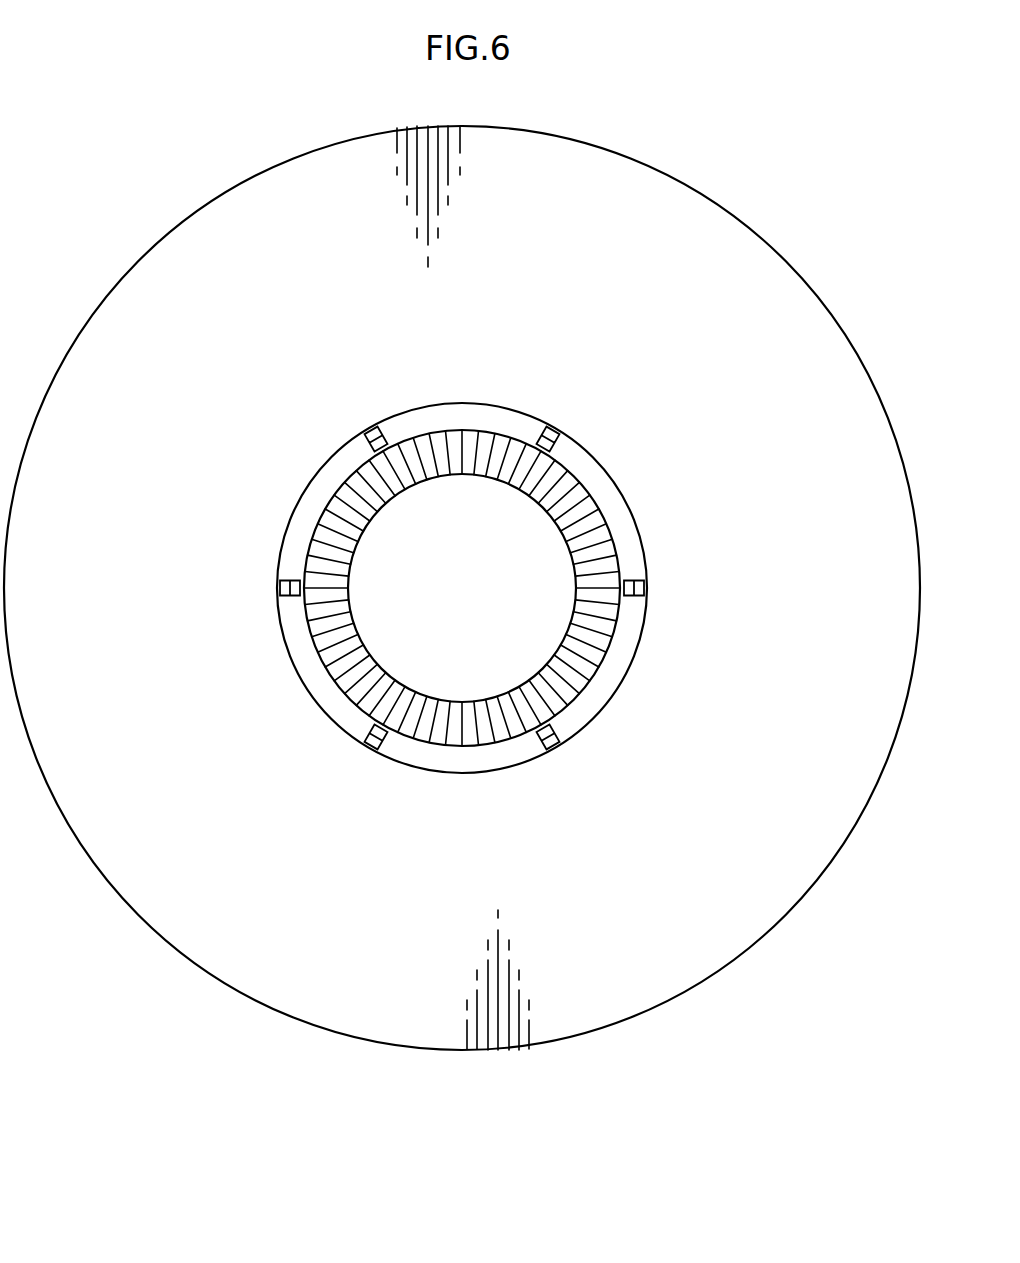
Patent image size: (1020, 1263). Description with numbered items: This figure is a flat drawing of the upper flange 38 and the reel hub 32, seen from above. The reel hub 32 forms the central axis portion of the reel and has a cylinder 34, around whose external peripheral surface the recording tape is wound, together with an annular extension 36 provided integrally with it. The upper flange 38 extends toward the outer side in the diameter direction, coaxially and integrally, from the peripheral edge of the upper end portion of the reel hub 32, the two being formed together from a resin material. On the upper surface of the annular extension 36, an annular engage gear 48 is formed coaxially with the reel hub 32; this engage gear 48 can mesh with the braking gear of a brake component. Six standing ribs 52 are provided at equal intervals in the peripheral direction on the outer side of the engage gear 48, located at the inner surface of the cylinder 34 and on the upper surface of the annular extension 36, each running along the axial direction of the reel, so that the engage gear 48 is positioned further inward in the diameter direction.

The upper flange 38 is at (770, 292).
The reel hub 32 is at (515, 598).
The cylinder 34 is at (624, 522).
The annular extension 36 is at (587, 707).
The engage gear 48 is at (437, 730).
The standing ribs 52 is at (548, 431).